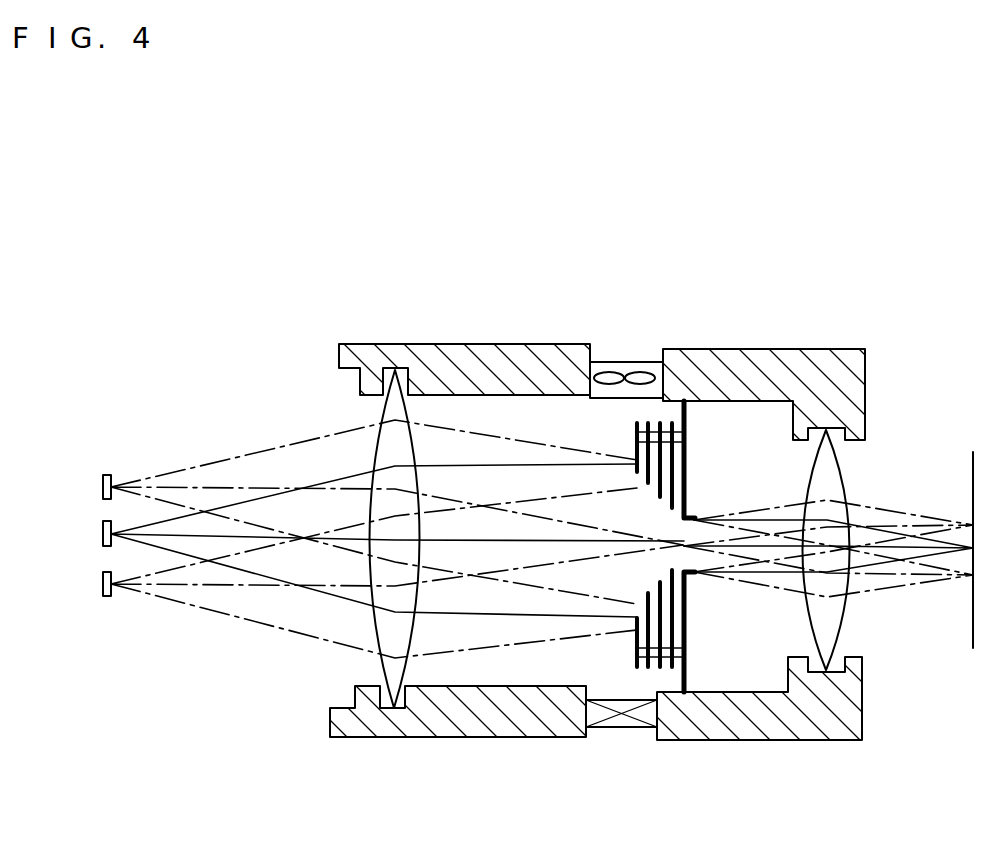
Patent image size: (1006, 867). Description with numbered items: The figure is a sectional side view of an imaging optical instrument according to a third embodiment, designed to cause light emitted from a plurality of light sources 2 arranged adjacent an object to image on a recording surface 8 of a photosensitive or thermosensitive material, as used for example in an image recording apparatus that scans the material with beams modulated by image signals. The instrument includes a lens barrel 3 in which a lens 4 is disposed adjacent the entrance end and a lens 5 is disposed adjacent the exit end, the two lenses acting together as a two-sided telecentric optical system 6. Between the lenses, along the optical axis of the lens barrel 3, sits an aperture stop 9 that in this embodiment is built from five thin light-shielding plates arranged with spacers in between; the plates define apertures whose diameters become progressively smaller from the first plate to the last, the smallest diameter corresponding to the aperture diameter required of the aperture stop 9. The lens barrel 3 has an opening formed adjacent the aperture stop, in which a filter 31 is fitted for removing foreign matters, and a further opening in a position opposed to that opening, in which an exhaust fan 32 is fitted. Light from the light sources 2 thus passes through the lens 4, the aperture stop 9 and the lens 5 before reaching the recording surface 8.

The light source 2 is at (103, 487).
The lens barrel 3 is at (718, 740).
The lens 4 is at (407, 372).
The lens 5 is at (818, 428).
The two-sided telecentric optical system 6 is at (624, 226).
The recording surface 8 is at (968, 638).
The aperture stop 9 is at (688, 641).
The filter 31 is at (612, 735).
The exhaust fan 32 is at (622, 368).